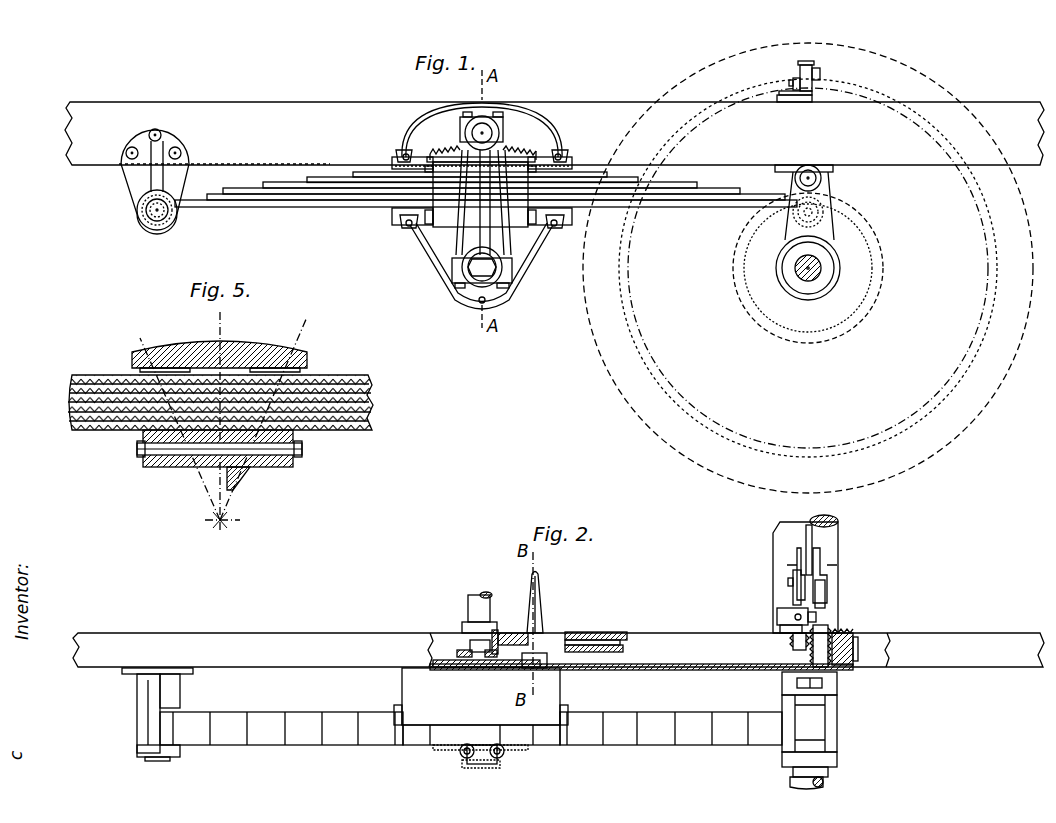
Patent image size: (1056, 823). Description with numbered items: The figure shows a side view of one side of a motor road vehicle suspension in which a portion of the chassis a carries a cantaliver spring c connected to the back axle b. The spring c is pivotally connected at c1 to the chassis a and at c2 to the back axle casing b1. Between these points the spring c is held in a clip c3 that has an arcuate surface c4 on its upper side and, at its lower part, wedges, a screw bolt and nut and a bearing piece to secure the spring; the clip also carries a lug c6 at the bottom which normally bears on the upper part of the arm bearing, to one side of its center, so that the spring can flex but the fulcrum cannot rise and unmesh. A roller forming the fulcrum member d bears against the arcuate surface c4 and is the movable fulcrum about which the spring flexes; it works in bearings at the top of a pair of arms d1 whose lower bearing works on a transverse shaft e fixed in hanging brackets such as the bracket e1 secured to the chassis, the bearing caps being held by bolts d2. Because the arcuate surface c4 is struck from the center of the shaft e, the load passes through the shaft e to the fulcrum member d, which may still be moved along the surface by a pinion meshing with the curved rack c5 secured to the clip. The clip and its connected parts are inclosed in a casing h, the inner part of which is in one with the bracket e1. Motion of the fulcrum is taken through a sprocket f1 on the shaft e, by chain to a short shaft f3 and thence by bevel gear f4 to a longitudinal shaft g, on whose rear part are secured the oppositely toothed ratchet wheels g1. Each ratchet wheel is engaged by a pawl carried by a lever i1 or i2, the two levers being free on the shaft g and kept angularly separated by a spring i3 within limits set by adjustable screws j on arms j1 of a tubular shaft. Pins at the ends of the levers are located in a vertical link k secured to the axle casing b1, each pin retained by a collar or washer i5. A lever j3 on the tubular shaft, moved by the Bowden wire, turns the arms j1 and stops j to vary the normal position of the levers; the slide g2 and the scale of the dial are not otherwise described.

In FIG. 1, the chassis a is at (554, 133).
In FIG. 2, the chassis a is at (558, 650).
In FIG. 1, the back axle b is at (835, 265).
In FIG. 2, the back axle b is at (822, 786).
In FIG. 1, the back axle casing b1 is at (822, 268).
In FIG. 1, the cantaliver spring c is at (300, 198).
In FIG. 5, the cantaliver spring c is at (350, 393).
In FIG. 2, the cantaliver spring c is at (645, 725).
In FIG. 1, the pivotal connection to chassis c1 is at (210, 181).
In FIG. 2, the pivotal connection to chassis c1 is at (145, 714).
In FIG. 1, the pivotal connection to back axle casing c2 is at (812, 196).
In FIG. 2, the pivotal connection to back axle casing c2 is at (812, 717).
In FIG. 1, the clip c3 is at (440, 193).
In FIG. 5, the clip c3 is at (173, 465).
In FIG. 2, the clip c3 is at (528, 748).
In FIG. 5, the arcuate surface c4 is at (193, 346).
In FIG. 2, the arcuate surface c4 is at (443, 733).
In FIG. 1, the curved rack c5 is at (510, 147).
In FIG. 2, the curved rack c5 is at (460, 753).
In FIG. 1, the lug c6 is at (515, 236).
In FIG. 5, the lug c6 is at (247, 480).
In FIG. 1, the fulcrum member d is at (485, 128).
In FIG. 2, the fulcrum member d is at (485, 768).
In FIG. 1, the arms d1 is at (470, 210).
In FIG. 1, the bolts d2 is at (460, 173).
In FIG. 2, the shaft e is at (468, 610).
In FIG. 2, the hanging bracket e1 is at (488, 612).
In FIG. 2, the sprocket f1 is at (537, 612).
In FIG. 2, the short shaft f3 is at (366, 610).
In FIG. 2, the bevel gear f4 is at (494, 628).
In FIG. 2, the longitudinal shaft g is at (598, 633).
In FIG. 2, the ratchet wheel g1 is at (856, 640).
In FIG. 2, the slide plate g2 is at (645, 648).
In FIG. 1, the casing h is at (505, 290).
In FIG. 2, the casing h is at (481, 696).
In FIG. 1, the lever i1 is at (802, 68).
In FIG. 2, the lever i1 is at (795, 588).
In FIG. 2, the lever i2 is at (826, 598).
In FIG. 2, the spring i3 is at (815, 655).
In FIG. 1, the collar or washer i5 is at (819, 72).
In FIG. 2, the collar or washer i5 is at (800, 560).
In FIG. 1, the adjustable screw j is at (828, 75).
In FIG. 2, the adjustable screw j is at (790, 617).
In FIG. 1, the arm j1 is at (783, 93).
In FIG. 2, the arm j1 is at (795, 614).
In FIG. 2, the lever j3 is at (546, 608).
In FIG. 1, the vertical link k is at (813, 66).
In FIG. 2, the vertical link k is at (812, 530).